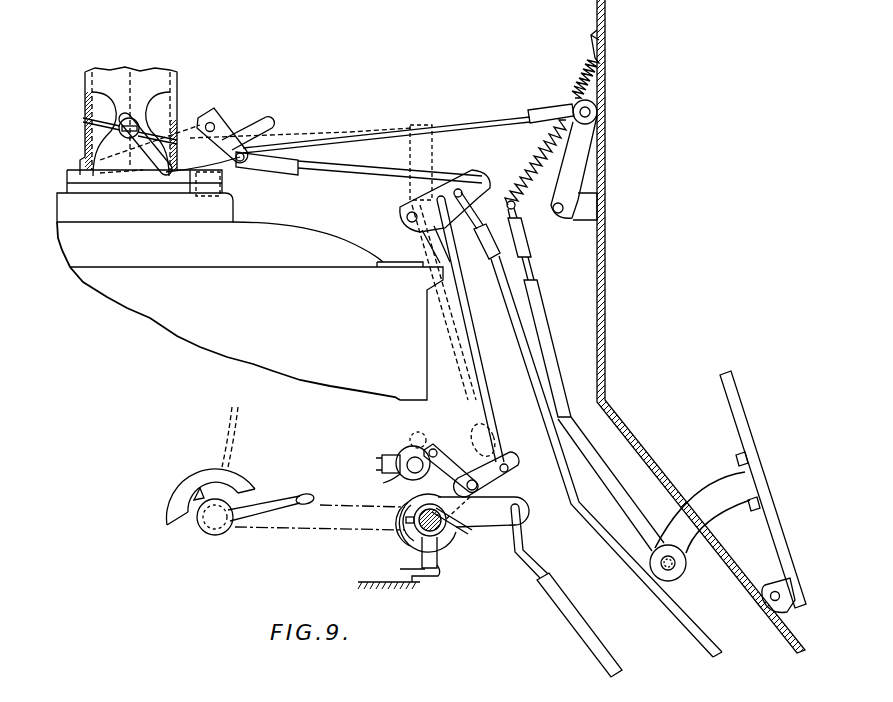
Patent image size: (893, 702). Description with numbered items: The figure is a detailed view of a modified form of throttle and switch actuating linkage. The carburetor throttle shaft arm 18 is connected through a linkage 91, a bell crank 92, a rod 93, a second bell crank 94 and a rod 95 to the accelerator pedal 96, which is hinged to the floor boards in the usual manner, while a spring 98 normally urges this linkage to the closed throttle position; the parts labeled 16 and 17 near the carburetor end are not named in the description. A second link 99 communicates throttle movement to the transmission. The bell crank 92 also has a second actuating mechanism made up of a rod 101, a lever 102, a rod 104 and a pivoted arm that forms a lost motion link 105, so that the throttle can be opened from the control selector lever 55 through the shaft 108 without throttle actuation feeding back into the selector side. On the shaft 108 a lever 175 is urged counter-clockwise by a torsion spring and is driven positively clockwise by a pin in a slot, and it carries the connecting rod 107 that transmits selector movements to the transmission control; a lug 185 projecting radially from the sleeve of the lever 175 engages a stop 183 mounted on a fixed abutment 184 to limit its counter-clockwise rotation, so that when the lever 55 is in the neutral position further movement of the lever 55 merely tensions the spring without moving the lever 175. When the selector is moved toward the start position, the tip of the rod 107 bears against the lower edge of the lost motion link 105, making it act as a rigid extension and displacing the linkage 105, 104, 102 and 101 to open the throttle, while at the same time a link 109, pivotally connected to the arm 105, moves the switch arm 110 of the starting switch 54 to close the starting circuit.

The bracket 16 is at (90, 120).
The pivot pin 17 is at (131, 123).
The carburetor throttle shaft arm 18 is at (150, 157).
The starting switch 54 is at (402, 477).
The control selector lever 55 is at (313, 496).
The linkage 91 is at (276, 141).
The bell crank 92 is at (212, 122).
The rod 93 is at (493, 110).
The bell crank 94 is at (578, 167).
The rod 95 is at (543, 315).
The accelerator pedal 96 is at (742, 418).
The spring 98 is at (573, 96).
The second link 99 is at (683, 622).
The rod 101 is at (380, 171).
The lever 102 is at (483, 181).
The rod 104 is at (470, 336).
The lost motion link 105 is at (505, 463).
The connecting rod 107 is at (577, 633).
The shaft 108 is at (417, 533).
The link 109 is at (458, 443).
The switch arm 110 is at (415, 458).
The lever 175 is at (489, 522).
The stop 183 is at (440, 574).
The fixed abutment 184 is at (377, 575).
The lug 185 is at (437, 557).